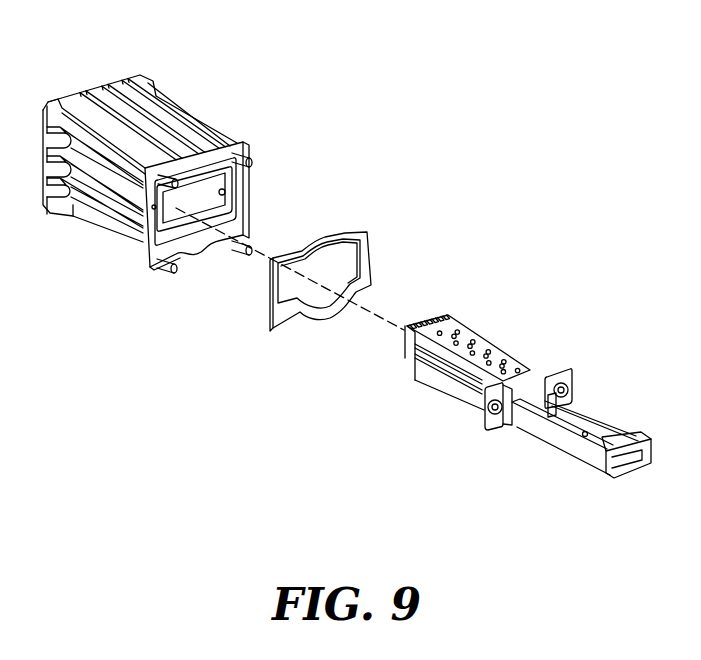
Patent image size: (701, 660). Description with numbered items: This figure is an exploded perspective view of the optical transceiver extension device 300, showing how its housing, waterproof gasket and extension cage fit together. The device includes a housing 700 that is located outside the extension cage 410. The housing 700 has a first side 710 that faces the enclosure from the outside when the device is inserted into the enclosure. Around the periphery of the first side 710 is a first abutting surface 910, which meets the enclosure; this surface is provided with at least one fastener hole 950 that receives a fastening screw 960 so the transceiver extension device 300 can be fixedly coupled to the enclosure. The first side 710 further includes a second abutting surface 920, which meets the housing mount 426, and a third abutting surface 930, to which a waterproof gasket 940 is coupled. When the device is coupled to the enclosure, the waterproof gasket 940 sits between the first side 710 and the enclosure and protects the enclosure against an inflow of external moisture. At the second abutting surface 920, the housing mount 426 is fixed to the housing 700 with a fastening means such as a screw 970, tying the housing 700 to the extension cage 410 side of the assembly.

The optical transceiver extension device 300 is at (594, 109).
The housing 700 is at (214, 97).
The first side 710 is at (367, 86).
The first abutting surface 910 is at (222, 158).
The second abutting surface 920 is at (228, 198).
The third abutting surface 930 is at (232, 224).
The waterproof gasket 940 is at (365, 244).
The fastener hole 950 is at (157, 275).
The fastening screw 960 is at (173, 273).
The extension cage 410 is at (515, 362).
The housing mount 426 is at (482, 416).
The screw 970 is at (568, 388).